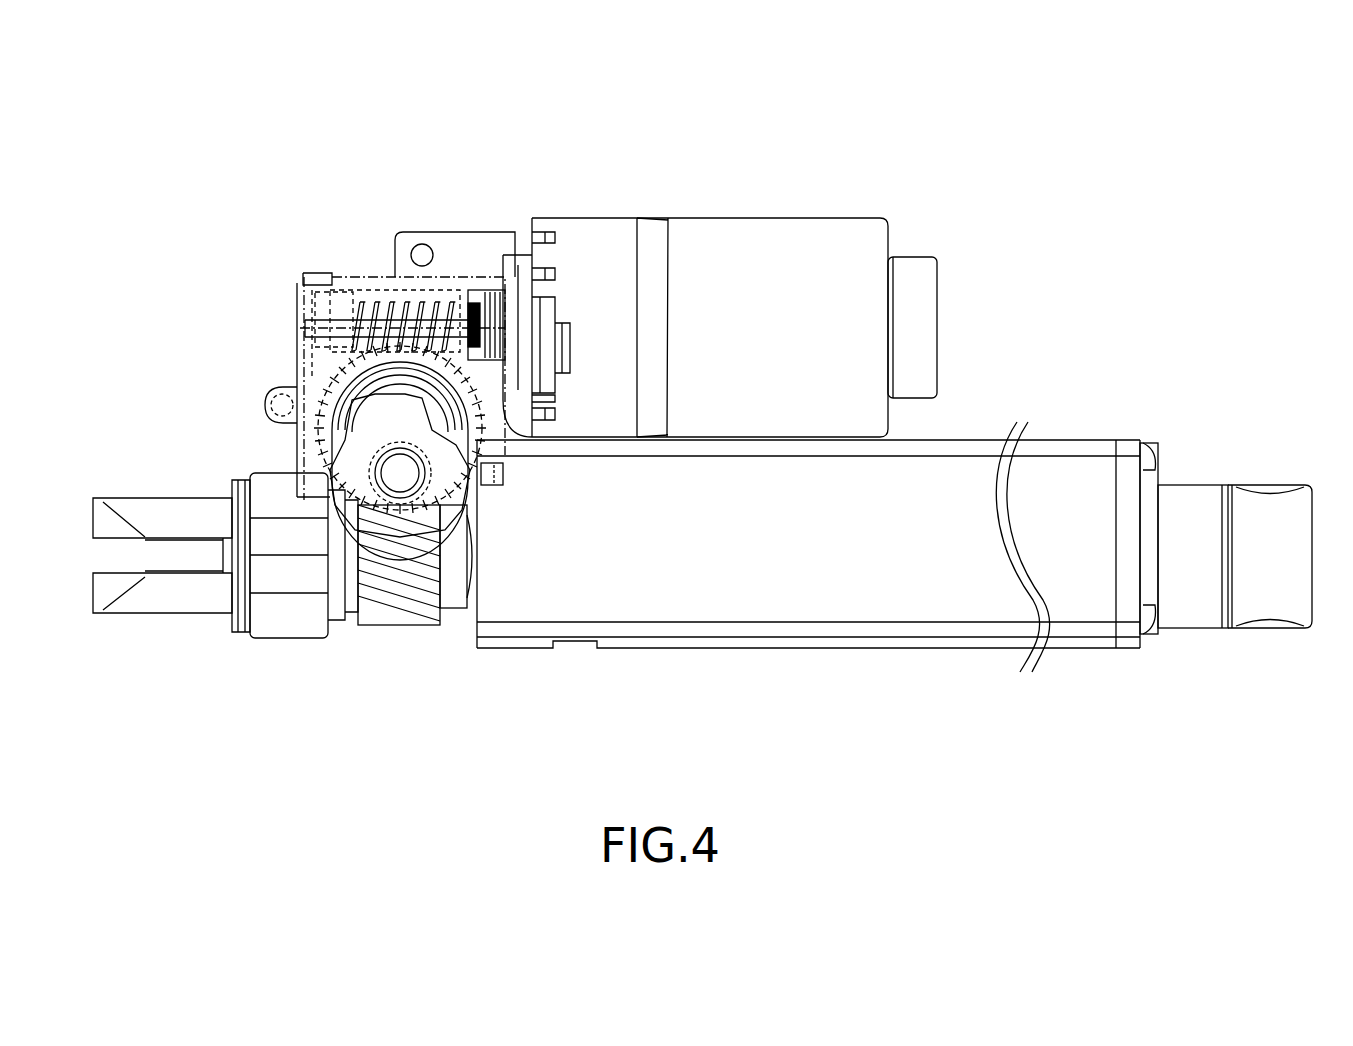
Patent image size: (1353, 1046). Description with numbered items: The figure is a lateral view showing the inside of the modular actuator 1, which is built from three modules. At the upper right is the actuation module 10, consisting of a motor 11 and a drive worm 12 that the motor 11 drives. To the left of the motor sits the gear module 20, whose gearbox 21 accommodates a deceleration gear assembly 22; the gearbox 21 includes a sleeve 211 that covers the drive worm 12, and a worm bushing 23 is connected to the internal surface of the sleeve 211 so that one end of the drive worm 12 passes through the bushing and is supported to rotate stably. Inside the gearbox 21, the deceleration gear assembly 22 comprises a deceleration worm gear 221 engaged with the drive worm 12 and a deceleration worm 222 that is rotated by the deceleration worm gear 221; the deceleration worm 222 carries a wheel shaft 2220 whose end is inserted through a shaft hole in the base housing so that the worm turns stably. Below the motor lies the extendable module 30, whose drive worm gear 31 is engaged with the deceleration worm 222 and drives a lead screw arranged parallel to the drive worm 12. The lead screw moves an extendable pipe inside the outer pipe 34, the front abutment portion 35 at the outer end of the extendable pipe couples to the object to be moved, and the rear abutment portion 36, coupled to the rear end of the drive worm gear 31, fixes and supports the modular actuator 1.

The modular actuator 1 is at (924, 112).
The actuation module 10 is at (766, 218).
The motor 11 is at (610, 240).
The drive worm 12 is at (420, 305).
The gear module 20 is at (253, 328).
The gearbox 21 is at (345, 277).
The sleeve 211 is at (380, 262).
The deceleration gear assembly 22 is at (158, 370).
The deceleration worm gear 221 is at (340, 365).
The deceleration worm 222 is at (345, 408).
The wheel shaft 2220 is at (392, 472).
The worm bushing 23 is at (302, 300).
The extendable module 30 is at (648, 655).
The drive worm gear 31 is at (405, 595).
The outer pipe 34 is at (860, 592).
The front abutment portion 35 is at (1205, 605).
The rear abutment portion 36 is at (183, 598).